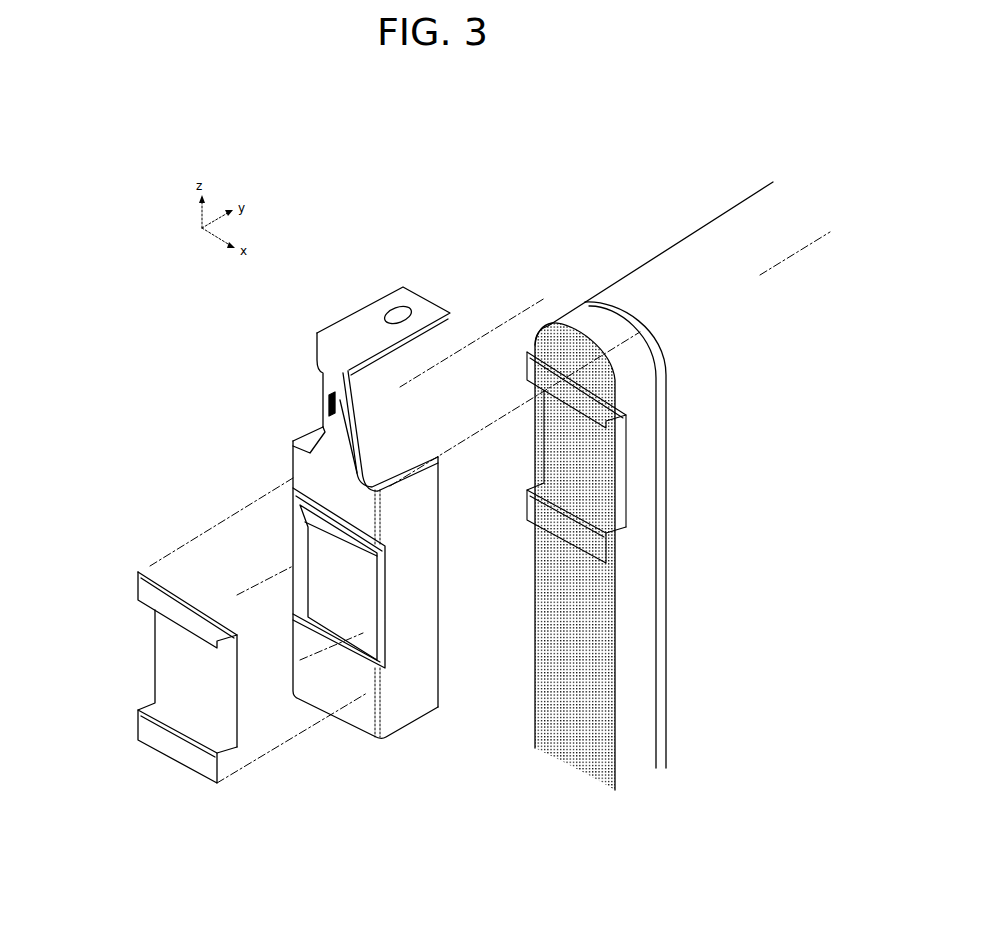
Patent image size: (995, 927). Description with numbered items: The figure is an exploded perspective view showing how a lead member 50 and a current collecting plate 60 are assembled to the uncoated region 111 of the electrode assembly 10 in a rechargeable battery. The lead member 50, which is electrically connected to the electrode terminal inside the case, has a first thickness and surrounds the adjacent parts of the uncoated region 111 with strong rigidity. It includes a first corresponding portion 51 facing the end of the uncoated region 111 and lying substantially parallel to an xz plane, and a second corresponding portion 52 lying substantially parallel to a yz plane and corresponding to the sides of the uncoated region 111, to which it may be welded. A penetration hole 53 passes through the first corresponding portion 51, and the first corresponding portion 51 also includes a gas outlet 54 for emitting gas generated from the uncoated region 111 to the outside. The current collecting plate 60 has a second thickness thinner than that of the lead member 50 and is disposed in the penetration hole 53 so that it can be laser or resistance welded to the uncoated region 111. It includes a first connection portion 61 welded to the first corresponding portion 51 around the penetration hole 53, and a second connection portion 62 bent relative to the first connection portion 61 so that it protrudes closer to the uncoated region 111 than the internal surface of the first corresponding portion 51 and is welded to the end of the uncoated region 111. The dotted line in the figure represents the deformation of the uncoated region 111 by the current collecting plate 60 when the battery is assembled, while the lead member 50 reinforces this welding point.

The electrode assembly 10 is at (650, 478).
The uncoated region 111 is at (577, 296).
The lead member 50 is at (336, 523).
The first corresponding portion 51 is at (352, 713).
The second corresponding portion 52 is at (415, 705).
The penetration hole 53 is at (297, 550).
The gas outlet 54 is at (326, 417).
The current collecting plate 60 is at (291, 578).
The first connection portion 61 is at (140, 597).
The second connection portion 62 is at (154, 682).